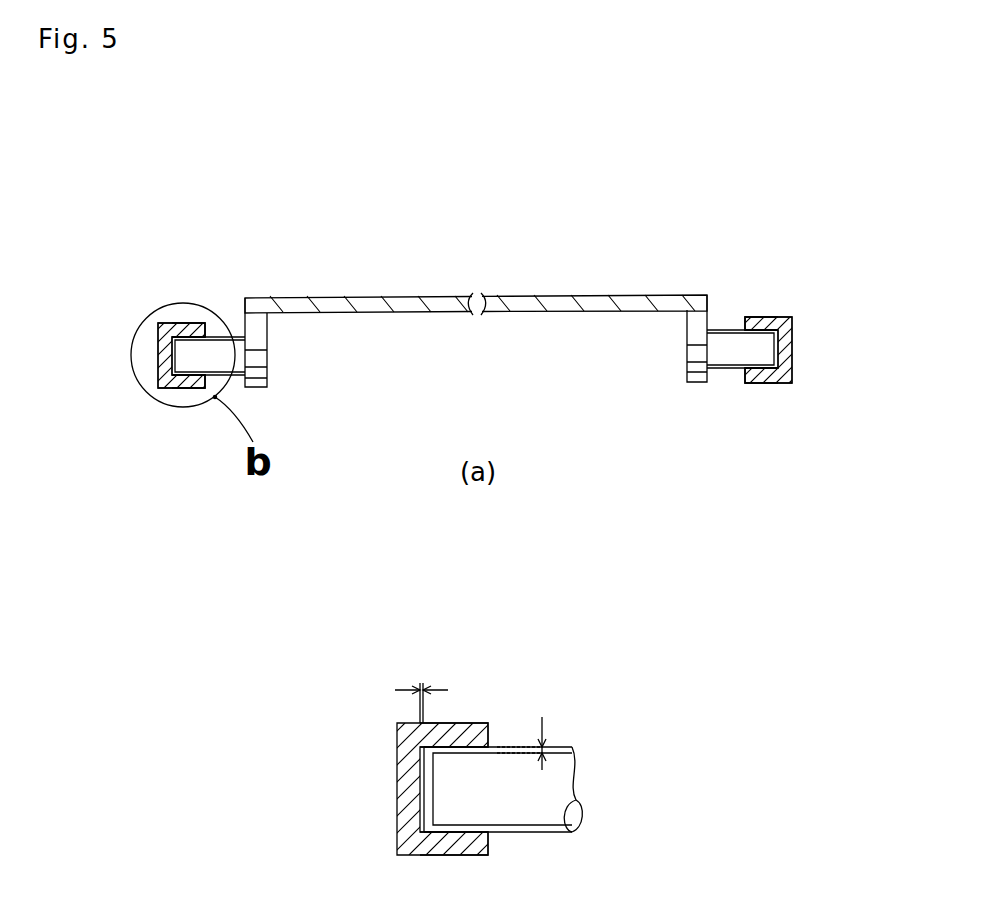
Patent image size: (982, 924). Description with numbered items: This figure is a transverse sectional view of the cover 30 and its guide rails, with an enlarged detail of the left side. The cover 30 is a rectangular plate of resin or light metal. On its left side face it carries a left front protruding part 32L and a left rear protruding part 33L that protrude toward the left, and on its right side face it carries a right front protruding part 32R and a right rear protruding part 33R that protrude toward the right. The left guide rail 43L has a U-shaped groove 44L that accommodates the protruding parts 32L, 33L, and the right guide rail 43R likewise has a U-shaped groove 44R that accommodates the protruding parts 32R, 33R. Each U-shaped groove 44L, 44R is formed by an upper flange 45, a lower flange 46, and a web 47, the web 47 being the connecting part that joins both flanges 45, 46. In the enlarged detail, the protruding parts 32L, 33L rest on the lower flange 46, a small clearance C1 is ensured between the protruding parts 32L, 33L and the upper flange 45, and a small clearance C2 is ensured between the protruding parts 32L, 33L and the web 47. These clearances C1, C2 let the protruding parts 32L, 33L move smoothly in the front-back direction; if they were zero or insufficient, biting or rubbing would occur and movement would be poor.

The cover 30 is at (450, 297).
The left front protruding part 32L is at (401, 557).
The left rear protruding part 33L is at (227, 336).
The right front protruding part 32R is at (732, 291).
The right rear protruding part 33R is at (730, 329).
The left guide rail 43L is at (157, 338).
The right guide rail 43R is at (795, 312).
The U-shaped groove 44L is at (207, 337).
The U-shaped groove 44R is at (748, 332).
The upper flange 45 is at (180, 323).
The lower flange 46 is at (183, 388).
The web 47 is at (158, 362).
The clearance C1 is at (527, 730).
The clearance C2 is at (421, 687).